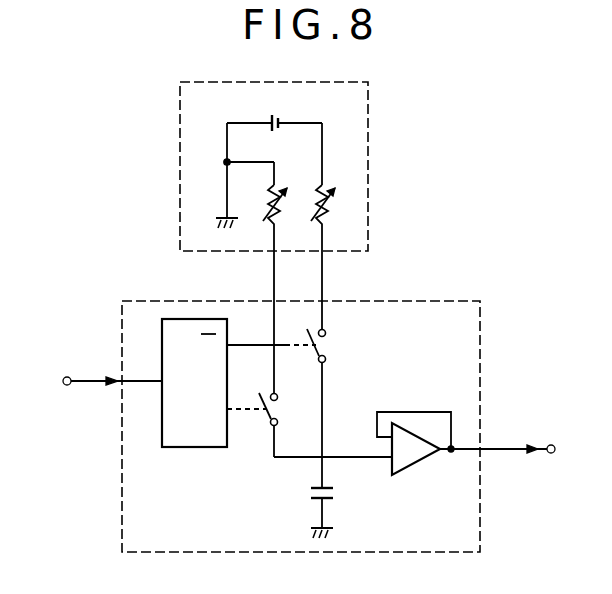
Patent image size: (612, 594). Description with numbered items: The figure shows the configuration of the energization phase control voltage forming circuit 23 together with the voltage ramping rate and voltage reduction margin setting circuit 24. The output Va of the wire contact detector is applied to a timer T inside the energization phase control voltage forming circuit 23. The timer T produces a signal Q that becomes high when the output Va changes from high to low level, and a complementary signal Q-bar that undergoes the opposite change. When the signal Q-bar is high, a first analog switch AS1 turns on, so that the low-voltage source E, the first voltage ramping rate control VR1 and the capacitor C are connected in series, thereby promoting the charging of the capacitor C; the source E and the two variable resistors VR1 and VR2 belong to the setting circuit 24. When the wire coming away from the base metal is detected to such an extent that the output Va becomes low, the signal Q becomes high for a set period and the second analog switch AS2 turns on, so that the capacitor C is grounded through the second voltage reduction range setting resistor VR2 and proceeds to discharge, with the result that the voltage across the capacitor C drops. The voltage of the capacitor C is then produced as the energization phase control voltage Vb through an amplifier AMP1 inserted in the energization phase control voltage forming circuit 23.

The energization phase control voltage forming circuit 23 is at (292, 389).
The voltage ramping rate and voltage reduction margin setting circuit 24 is at (314, 166).
The low-voltage source E is at (274, 108).
The first voltage ramping rate control VR1 is at (339, 175).
The second voltage reduction range setting resistor VR2 is at (273, 189).
The timer T is at (194, 383).
The first analog switch AS1 is at (340, 346).
The second analog switch AS2 is at (292, 409).
The capacitor C is at (330, 509).
The amplifier AMP1 is at (419, 455).